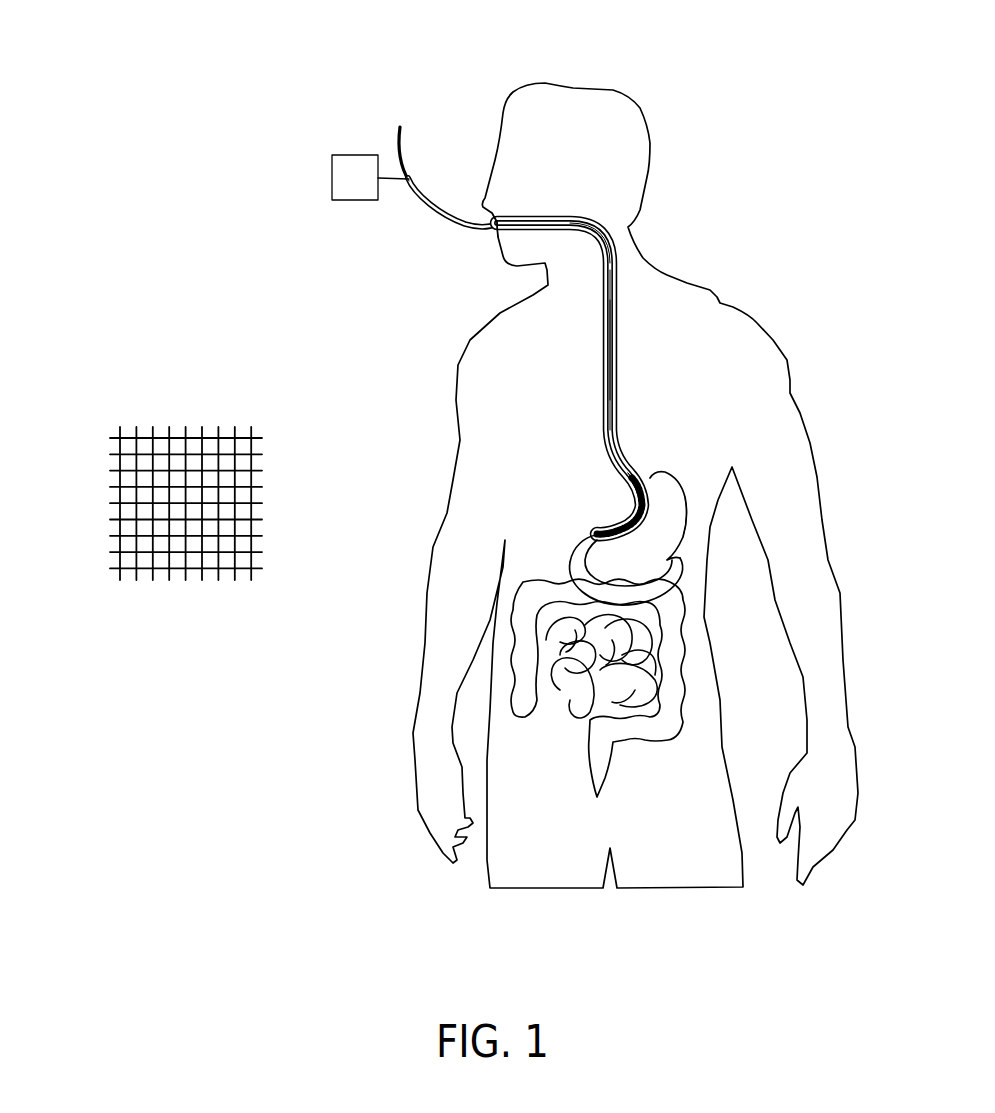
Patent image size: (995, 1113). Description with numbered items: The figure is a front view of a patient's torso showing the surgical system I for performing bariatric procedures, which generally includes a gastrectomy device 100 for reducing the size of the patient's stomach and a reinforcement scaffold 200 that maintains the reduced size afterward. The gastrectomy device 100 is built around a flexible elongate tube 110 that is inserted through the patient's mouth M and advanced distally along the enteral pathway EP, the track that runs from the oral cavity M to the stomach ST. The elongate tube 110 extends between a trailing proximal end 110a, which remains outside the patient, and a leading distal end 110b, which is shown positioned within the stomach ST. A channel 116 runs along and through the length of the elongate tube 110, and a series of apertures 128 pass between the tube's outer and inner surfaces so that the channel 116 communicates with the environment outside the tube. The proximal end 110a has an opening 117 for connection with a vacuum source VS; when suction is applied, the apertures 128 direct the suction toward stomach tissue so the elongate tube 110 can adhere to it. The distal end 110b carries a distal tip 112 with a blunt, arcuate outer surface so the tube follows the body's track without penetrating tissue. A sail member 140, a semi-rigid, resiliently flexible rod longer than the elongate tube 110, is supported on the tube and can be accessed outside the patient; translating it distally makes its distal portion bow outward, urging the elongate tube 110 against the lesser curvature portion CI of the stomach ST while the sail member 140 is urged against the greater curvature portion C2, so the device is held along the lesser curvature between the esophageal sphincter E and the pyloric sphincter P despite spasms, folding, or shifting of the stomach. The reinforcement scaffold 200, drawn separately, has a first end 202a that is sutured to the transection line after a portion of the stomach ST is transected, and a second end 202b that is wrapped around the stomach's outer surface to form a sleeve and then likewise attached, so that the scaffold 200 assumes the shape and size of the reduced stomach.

The gastrectomy device 100 is at (616, 373).
The elongate tube 110 is at (646, 521).
The proximal end 110a is at (455, 217).
The distal end 110b is at (622, 527).
The distal tip 112 is at (593, 534).
The channel 116 is at (610, 340).
The opening 117 is at (407, 180).
The apertures 128 is at (627, 530).
The sail member 140 is at (409, 154).
The reinforcement scaffold 200 is at (178, 450).
The first end of reinforcement scaffold 202a is at (115, 520).
The second end of reinforcement scaffold 202b is at (252, 480).
The vacuum source VS is at (355, 177).
The system for performing bariatric procedures I is at (386, 101).
The mouth M is at (497, 228).
The enteral pathway EP is at (588, 207).
The esophageal sphincter E is at (650, 481).
The stomach ST is at (672, 499).
The greater curvature portion C2 is at (684, 518).
The lesser curvature portion CI is at (638, 510).
The pyloric sphincter P is at (593, 559).